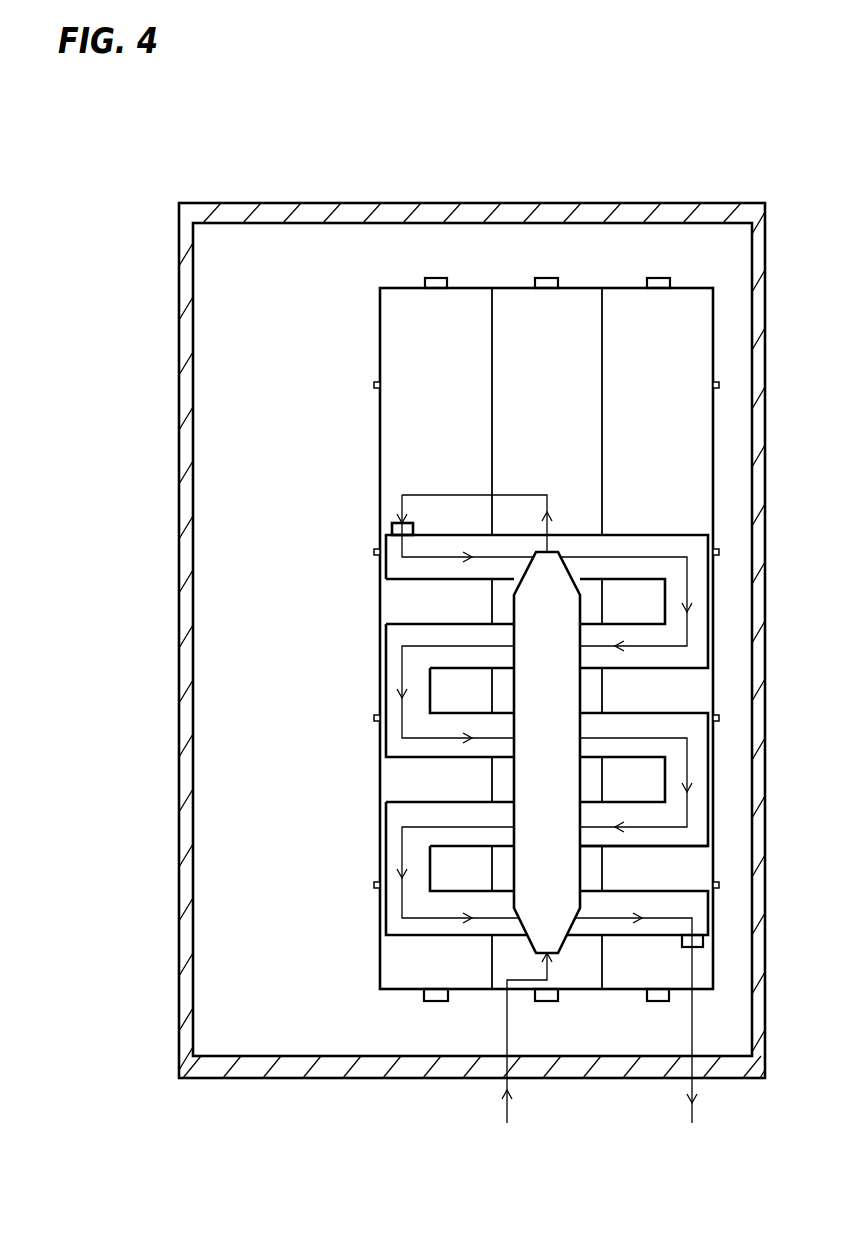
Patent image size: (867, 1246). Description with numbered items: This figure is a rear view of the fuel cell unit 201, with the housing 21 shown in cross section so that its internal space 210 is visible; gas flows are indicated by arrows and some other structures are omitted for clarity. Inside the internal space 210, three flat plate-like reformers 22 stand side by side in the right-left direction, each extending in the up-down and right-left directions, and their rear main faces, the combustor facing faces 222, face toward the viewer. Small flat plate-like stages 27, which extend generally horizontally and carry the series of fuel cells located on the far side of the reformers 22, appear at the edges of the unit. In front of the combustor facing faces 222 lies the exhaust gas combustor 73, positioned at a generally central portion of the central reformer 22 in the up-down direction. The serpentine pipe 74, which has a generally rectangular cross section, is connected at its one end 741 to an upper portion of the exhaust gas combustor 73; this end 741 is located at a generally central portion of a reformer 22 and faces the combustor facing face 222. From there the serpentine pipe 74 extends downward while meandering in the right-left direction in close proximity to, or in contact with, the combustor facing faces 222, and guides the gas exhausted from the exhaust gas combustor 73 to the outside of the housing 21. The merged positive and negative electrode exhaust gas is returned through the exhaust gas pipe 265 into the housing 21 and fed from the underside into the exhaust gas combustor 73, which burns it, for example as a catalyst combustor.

The housing 21 is at (182, 268).
The internal space 210 is at (242, 267).
The fuel cell unit 201 is at (373, 282).
The reformer 22 is at (468, 298).
The combustor facing face 222 is at (425, 340).
The stage 27 is at (374, 385).
The serpentine pipe 74 is at (390, 570).
The one end of the serpentine pipe 741 is at (388, 530).
The exhaust gas combustor 73 is at (530, 602).
The exhaust gas pipe 265 is at (506, 1110).